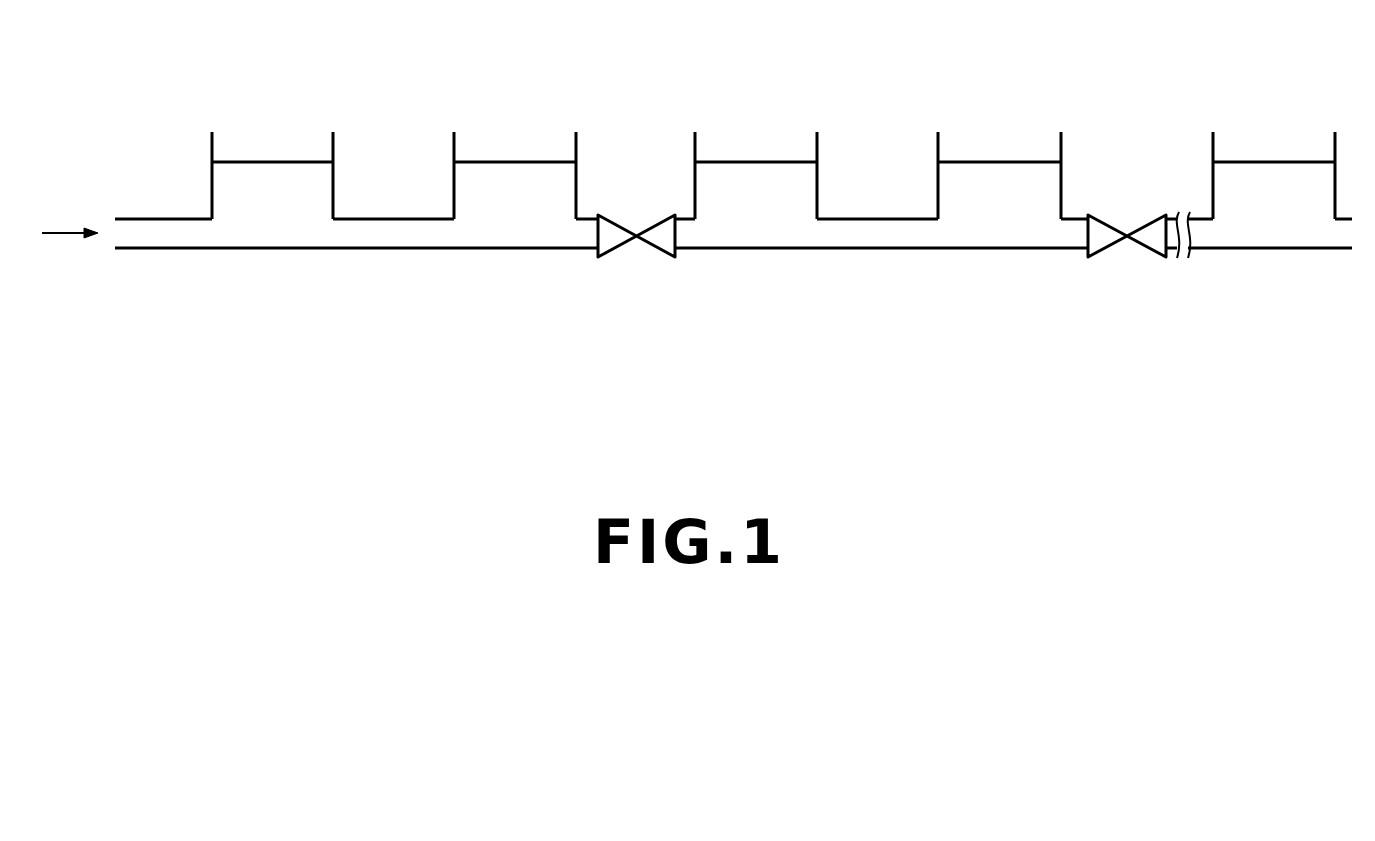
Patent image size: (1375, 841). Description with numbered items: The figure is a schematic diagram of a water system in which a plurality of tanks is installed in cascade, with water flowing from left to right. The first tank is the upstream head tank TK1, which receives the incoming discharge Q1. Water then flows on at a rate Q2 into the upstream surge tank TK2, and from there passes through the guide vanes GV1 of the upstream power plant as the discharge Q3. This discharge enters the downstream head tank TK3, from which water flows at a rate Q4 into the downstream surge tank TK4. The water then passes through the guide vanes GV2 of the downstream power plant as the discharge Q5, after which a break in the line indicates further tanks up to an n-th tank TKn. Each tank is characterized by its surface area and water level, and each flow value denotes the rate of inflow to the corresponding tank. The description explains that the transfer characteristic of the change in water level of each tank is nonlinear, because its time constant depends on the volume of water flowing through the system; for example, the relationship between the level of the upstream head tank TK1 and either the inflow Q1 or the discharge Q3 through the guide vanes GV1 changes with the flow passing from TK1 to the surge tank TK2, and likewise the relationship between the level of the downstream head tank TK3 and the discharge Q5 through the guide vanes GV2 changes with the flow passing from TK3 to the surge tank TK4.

The upstream head tank TK1 is at (212, 163).
The upstream surge tank TK2 is at (454, 167).
The downstream head tank TK3 is at (695, 170).
The downstream surge tank TK4 is at (938, 172).
The n-th tank TKn is at (1213, 183).
The guide vanes of upstream power plant GV1 is at (619, 223).
The guide vanes of downstream power plant GV2 is at (1117, 223).
The discharge flowing into upstream head tank Q1 is at (223, 258).
The rate of inflow to tank TK2 Q2 is at (465, 258).
The discharge through guide vanes GV1 Q3 is at (719, 258).
The rate of inflow to tank TK4 Q4 is at (952, 258).
The discharge through guide vanes GV2 Q5 is at (1236, 254).